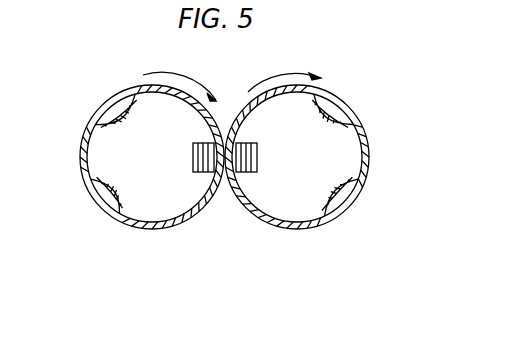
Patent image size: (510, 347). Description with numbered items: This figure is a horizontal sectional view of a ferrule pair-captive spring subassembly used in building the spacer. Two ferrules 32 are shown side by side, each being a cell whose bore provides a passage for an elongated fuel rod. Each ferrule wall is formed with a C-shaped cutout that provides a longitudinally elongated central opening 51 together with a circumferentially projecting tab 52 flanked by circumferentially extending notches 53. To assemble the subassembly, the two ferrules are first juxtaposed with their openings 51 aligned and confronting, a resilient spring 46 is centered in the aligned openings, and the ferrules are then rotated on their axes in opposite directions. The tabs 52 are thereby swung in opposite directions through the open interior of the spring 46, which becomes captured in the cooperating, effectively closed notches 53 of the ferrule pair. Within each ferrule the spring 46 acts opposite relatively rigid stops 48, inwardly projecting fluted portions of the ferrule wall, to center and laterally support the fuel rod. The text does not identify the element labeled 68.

The ferrule 32 is at (371, 160).
The resilient spring 46 is at (258, 168).
The stops 48 is at (138, 160).
The central opening 51 is at (246, 114).
The tab 52 is at (214, 182).
The notches 53 is at (203, 144).
The seam 68 is at (118, 113).